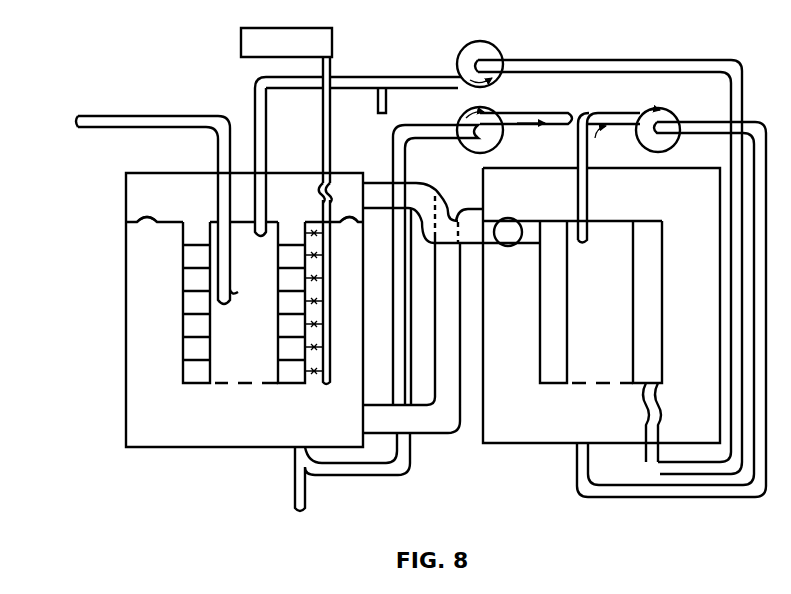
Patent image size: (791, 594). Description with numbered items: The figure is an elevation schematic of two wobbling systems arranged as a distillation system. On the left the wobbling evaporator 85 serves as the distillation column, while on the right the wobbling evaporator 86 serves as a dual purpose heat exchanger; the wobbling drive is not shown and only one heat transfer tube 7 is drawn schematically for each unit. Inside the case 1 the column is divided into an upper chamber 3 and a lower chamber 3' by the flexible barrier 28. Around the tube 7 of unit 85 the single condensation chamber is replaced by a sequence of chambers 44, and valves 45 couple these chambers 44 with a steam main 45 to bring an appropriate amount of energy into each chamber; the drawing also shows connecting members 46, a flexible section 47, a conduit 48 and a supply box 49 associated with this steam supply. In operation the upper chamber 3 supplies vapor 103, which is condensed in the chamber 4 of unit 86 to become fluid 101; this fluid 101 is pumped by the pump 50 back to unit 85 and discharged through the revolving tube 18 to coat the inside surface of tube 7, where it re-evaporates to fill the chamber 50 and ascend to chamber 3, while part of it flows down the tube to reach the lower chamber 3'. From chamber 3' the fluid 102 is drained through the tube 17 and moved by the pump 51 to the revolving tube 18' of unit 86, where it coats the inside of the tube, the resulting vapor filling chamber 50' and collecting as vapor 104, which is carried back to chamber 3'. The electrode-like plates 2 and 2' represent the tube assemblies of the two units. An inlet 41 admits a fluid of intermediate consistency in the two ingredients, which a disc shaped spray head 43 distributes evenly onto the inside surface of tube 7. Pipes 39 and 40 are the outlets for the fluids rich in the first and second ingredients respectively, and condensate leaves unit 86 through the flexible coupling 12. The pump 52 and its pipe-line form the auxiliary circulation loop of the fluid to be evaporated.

The case 1 is at (126, 330).
The electrode assembly 2 is at (178, 302).
The electrode assembly 2' is at (681, 255).
The upper chamber 3 is at (244, 204).
The lower chamber 3' is at (214, 418).
The condensation chamber 4 is at (647, 302).
The heat transfer tube 7 is at (210, 370).
The flexible coupling 12 is at (664, 422).
The tube 17 is at (293, 453).
The revolving tube 18 is at (276, 185).
The revolving tube 18' is at (609, 178).
The flexible barrier 28 is at (168, 226).
The outlet pipe 39 is at (392, 94).
The outlet pipe 40 is at (300, 547).
The inlet 41 is at (60, 126).
The spray head 43 is at (236, 302).
The chambers 44 is at (292, 378).
The valves and steam main 45 is at (330, 276).
The connectors 46 is at (323, 293).
The flexible section 47 is at (320, 199).
The conduit 48 is at (323, 108).
The reservoir 49 is at (286, 42).
The pump 50 is at (491, 247).
The chamber 50' is at (579, 302).
The pump 51 is at (482, 256).
The pump 52 is at (671, 293).
The wobbling evaporator 85 is at (152, 425).
The wobbling evaporator 86 is at (601, 305).
The fluid 101 is at (260, 156).
The fluid 102 is at (492, 241).
The vapor 103 is at (366, 196).
The vapor 104 is at (490, 196).